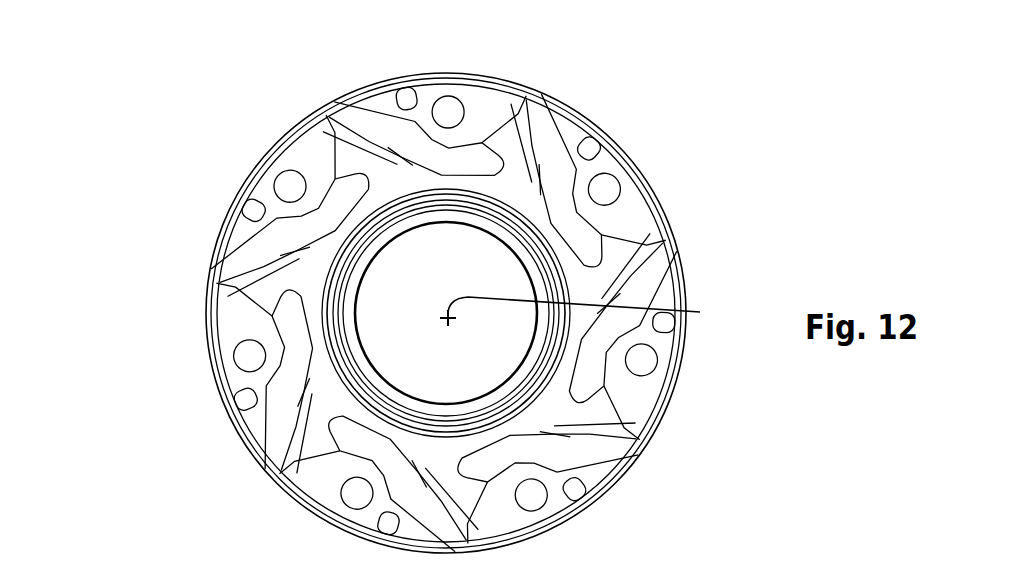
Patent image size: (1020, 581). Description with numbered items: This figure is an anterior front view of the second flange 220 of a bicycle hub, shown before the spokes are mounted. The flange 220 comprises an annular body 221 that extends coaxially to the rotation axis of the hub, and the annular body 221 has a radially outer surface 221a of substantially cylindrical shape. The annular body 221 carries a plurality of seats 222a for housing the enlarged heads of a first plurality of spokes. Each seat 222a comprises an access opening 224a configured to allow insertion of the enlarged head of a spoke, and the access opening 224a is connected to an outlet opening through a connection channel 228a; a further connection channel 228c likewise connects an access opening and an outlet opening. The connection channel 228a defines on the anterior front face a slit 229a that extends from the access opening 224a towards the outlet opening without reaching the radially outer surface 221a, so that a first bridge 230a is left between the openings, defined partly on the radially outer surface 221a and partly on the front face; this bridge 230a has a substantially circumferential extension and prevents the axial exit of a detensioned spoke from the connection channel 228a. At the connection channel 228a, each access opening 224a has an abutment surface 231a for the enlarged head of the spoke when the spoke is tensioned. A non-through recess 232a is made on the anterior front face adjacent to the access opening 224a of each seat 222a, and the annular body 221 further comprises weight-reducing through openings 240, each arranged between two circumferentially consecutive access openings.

The flange 220 is at (268, 124).
The annular body 221 is at (214, 376).
The radially outer surface 221a is at (640, 170).
The first seat 222a is at (242, 402).
The first access opening 224a is at (289, 187).
The connection channel 228a is at (670, 322).
The connection channel 228c is at (258, 214).
The slit 229a is at (390, 525).
The first bridge 230a is at (596, 494).
The abutment surface 231a is at (415, 103).
The non-through recess 232a is at (485, 103).
The weight-reducing through opening 240 is at (640, 283).